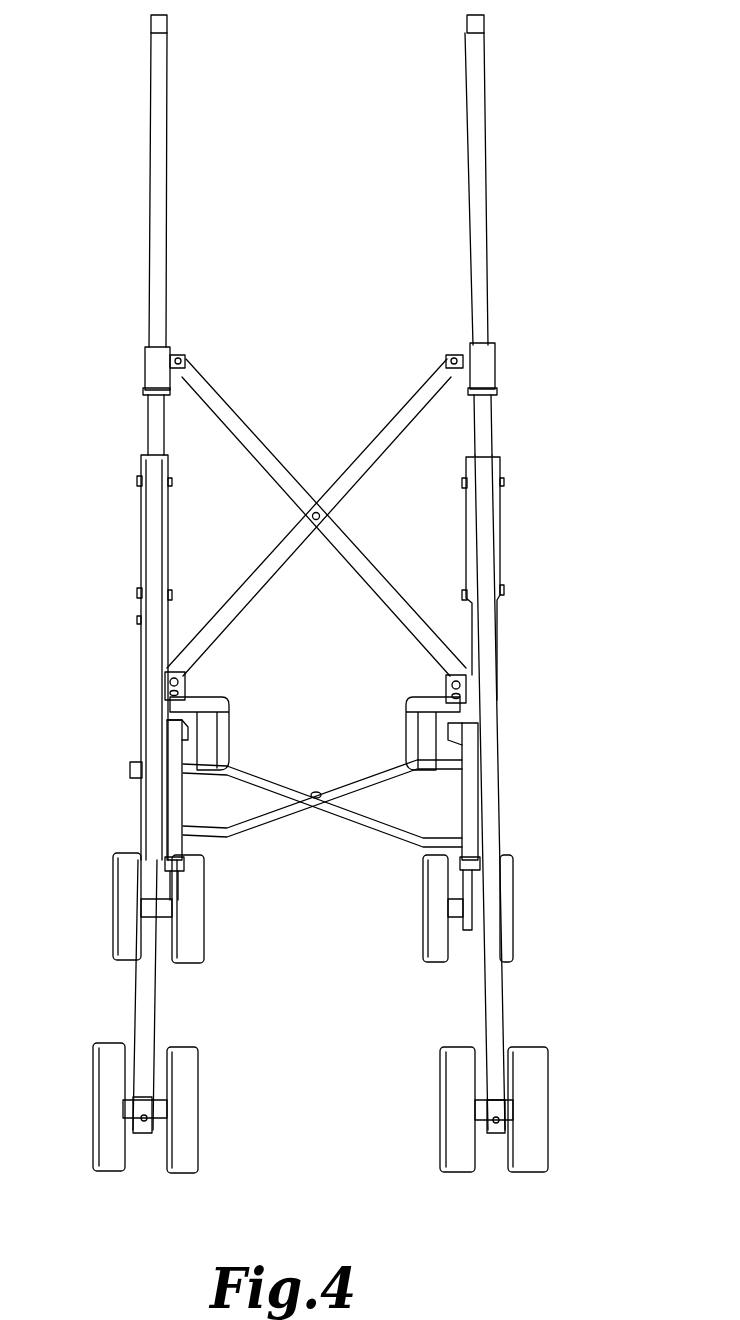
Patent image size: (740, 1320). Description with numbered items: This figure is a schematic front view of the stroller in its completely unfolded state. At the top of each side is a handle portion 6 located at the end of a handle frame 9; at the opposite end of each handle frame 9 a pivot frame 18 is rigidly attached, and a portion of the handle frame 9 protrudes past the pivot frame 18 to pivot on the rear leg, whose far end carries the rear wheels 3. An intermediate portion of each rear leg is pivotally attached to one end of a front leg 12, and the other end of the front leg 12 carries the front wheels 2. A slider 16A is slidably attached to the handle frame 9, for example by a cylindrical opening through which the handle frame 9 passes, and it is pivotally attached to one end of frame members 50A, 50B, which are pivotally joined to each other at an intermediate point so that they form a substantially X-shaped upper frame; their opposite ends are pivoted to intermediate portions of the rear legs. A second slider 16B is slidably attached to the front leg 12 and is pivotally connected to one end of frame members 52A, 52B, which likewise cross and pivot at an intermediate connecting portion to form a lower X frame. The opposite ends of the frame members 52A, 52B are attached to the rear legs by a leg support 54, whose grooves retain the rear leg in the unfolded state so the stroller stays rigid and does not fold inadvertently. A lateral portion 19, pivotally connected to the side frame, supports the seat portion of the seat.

The front wheels 2 is at (187, 1128).
The rear wheels 3 is at (122, 912).
The handle portion 6 is at (162, 15).
The handle frame 9 is at (153, 170).
The front leg 12 is at (140, 1003).
The slider 16A is at (146, 372).
The slider 16B is at (496, 372).
The pivot frame 18 is at (142, 518).
The lateral portion 19 is at (172, 828).
The frame member 50A is at (402, 418).
The frame member 50B is at (228, 402).
The frame member 52A is at (268, 830).
The frame member 52B is at (376, 832).
The leg support 54 is at (132, 768).